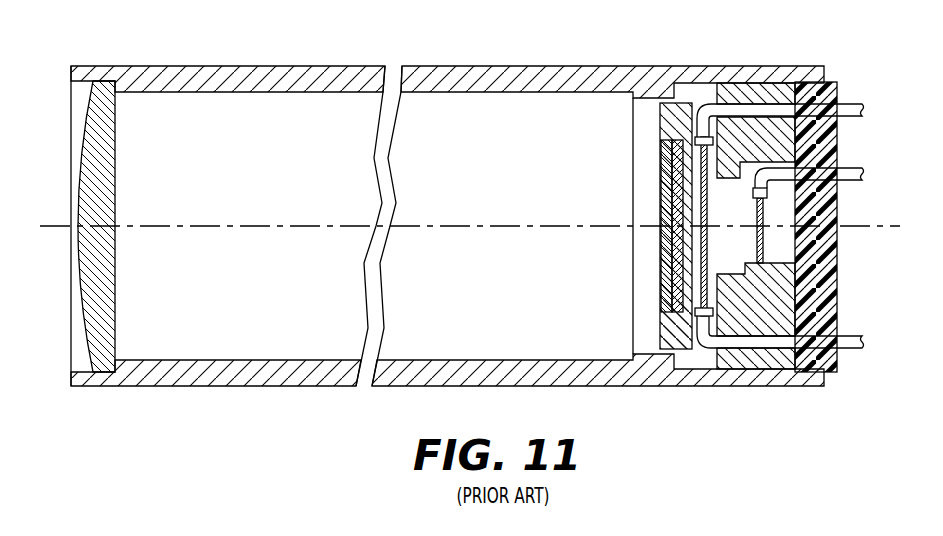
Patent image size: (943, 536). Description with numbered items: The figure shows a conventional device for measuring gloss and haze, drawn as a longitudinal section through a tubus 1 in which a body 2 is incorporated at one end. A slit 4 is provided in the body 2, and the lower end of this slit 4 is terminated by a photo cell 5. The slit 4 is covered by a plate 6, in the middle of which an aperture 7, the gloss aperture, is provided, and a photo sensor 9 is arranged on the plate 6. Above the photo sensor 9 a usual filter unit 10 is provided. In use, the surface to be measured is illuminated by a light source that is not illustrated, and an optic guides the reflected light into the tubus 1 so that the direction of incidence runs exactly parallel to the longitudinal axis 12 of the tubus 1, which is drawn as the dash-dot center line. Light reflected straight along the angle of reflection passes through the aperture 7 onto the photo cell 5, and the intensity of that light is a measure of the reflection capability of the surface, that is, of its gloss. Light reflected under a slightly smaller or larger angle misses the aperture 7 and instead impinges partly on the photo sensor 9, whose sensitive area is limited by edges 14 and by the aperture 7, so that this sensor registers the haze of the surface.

The tubus 1 is at (198, 65).
The body 2 is at (753, 127).
The slit 4 is at (735, 262).
The photo cell 5 is at (770, 204).
The plate 6 is at (677, 293).
The aperture 7 is at (708, 237).
The photo sensor 9 is at (670, 212).
The filter unit 10 is at (667, 158).
The longitudinal axis 12 is at (318, 225).
The edges 14 is at (667, 190).